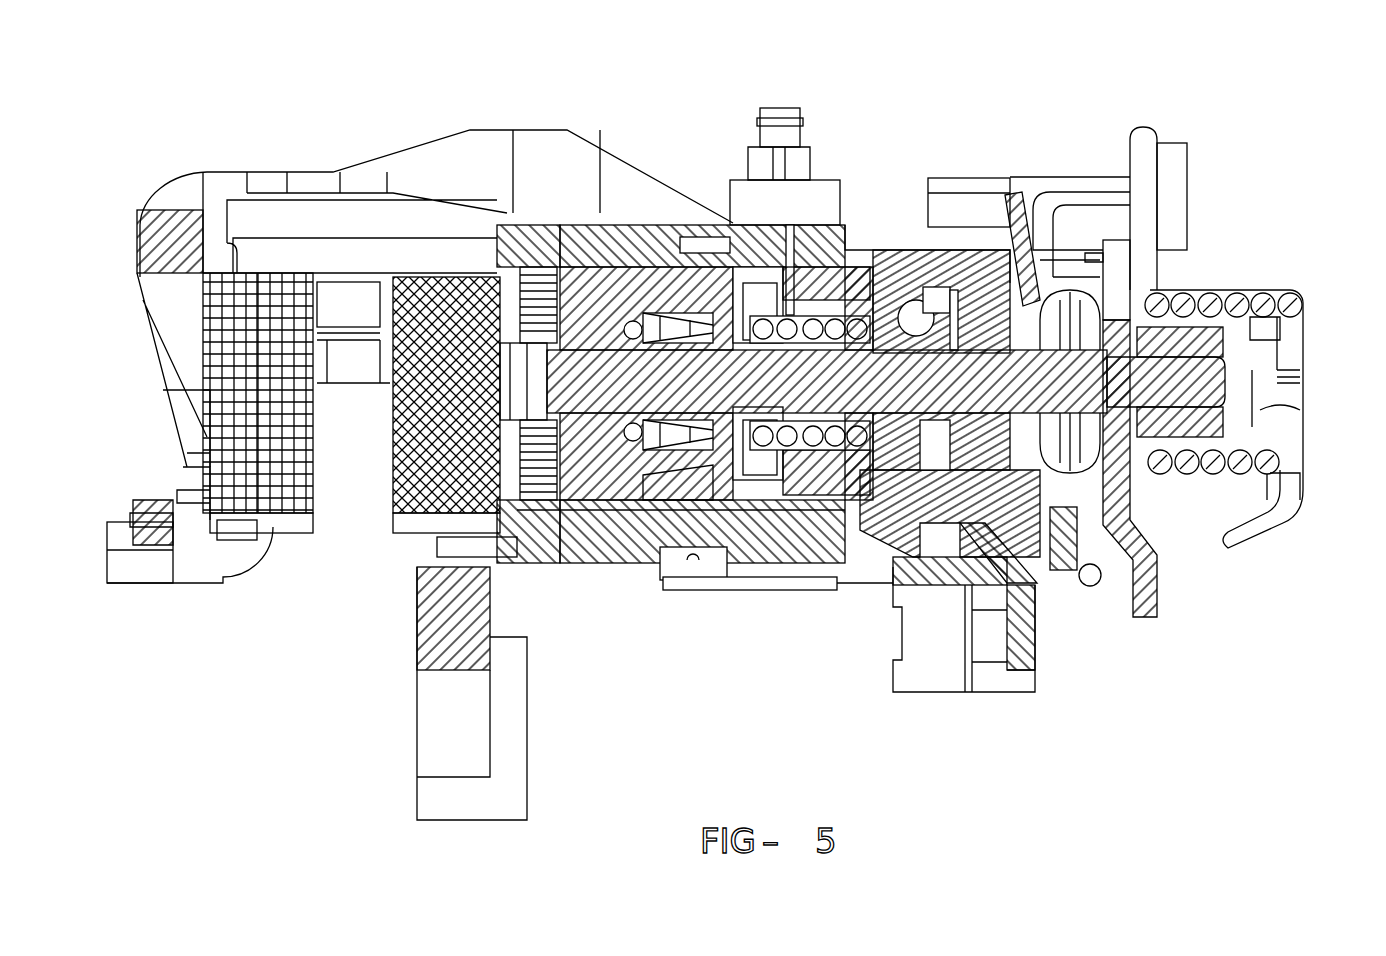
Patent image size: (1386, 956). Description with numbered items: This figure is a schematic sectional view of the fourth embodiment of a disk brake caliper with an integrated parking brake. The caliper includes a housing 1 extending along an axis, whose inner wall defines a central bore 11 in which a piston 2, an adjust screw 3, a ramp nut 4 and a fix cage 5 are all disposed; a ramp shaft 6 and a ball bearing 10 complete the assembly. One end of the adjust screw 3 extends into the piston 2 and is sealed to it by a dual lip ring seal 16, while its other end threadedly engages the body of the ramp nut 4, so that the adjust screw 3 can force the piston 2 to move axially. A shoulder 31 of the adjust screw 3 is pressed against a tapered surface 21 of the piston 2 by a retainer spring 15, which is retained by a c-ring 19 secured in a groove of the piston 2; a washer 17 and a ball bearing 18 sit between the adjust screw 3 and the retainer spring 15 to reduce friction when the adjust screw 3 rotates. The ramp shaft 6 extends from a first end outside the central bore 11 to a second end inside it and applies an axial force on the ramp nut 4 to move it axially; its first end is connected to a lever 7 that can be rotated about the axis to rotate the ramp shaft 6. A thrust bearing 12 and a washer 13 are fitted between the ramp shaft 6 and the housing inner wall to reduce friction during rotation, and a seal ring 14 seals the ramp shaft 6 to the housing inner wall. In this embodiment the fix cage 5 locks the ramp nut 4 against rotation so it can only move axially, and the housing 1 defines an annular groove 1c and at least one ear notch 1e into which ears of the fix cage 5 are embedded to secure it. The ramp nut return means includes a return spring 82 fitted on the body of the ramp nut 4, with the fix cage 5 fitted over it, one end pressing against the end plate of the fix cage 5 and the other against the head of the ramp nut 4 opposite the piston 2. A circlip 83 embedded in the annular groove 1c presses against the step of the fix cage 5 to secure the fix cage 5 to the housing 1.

The housing 1 is at (810, 567).
The annular groove 1c is at (790, 107).
The ear notch 1e is at (837, 585).
The piston 2 is at (600, 227).
The adjust screw 3 is at (727, 227).
The ramp nut 4 is at (877, 237).
The fix cage 5 is at (843, 237).
The ramp shaft 6 is at (1253, 385).
The lever 7 is at (1163, 600).
The ball bearing 10 is at (910, 245).
The central bore 11 is at (775, 590).
The thrust bearing 12 is at (945, 245).
The washer 13 is at (973, 245).
The seal ring 14 is at (1013, 240).
The retainer spring 15 is at (680, 230).
The dual lip ring seal 16 is at (513, 227).
The washer 17 is at (647, 567).
The ball bearing 18 is at (687, 582).
The c-ring 19 is at (713, 227).
The tapered surface 21 is at (583, 567).
The shoulder 31 is at (617, 560).
The return spring 82 is at (858, 545).
The circlip 83 is at (790, 227).